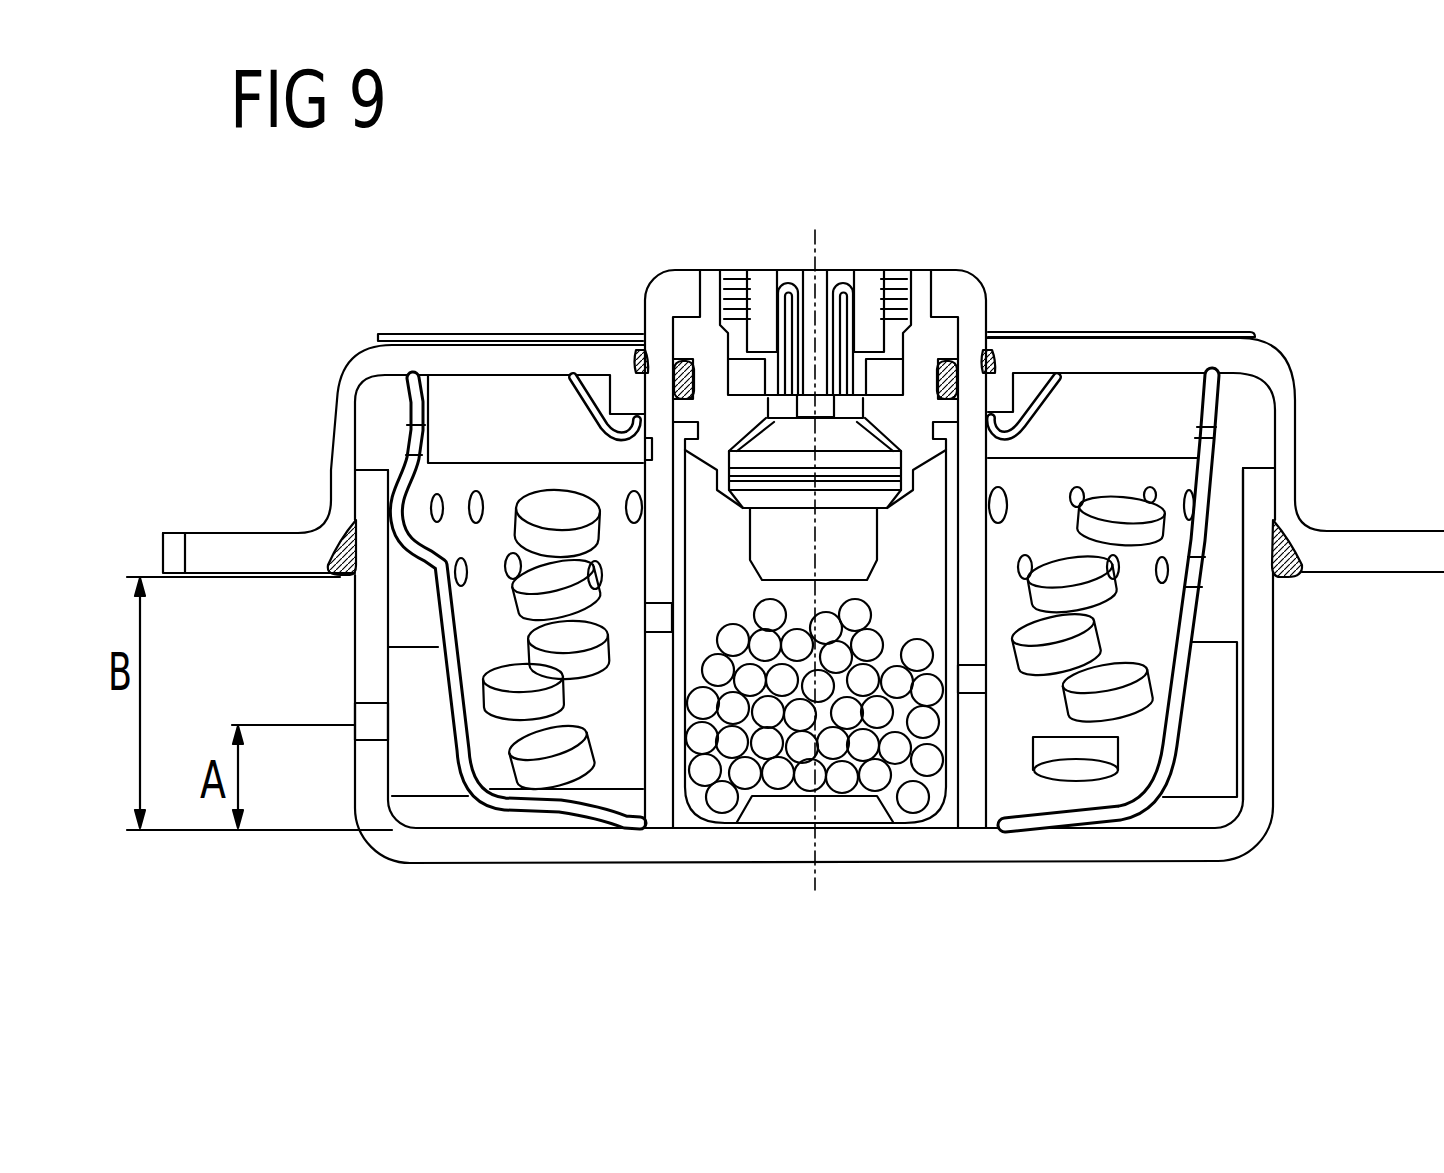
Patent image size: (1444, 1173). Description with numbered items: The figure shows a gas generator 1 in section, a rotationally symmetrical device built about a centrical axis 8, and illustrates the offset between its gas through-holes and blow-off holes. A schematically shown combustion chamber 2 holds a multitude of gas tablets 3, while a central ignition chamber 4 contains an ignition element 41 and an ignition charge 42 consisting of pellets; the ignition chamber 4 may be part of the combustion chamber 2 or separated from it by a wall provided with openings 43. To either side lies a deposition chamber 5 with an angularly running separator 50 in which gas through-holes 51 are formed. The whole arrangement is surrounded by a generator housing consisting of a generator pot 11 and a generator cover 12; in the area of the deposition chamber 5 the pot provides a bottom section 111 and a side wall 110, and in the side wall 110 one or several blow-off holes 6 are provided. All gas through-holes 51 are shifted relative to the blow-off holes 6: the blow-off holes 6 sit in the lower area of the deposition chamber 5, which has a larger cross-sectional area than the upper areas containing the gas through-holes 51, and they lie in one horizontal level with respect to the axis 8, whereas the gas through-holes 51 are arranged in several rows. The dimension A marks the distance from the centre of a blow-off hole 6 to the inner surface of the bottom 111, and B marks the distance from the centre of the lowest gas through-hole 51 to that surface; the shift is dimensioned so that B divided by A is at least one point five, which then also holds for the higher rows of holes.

The gas generator 1 is at (1125, 295).
The combustion chamber 2 is at (1018, 802).
The gas tablets 3 is at (1093, 767).
The ignition chamber 4 is at (925, 495).
The deposition chamber 5 is at (417, 748).
The blow-off holes 6 is at (365, 715).
The centrical axis 8 is at (818, 243).
The generator pot 11 is at (585, 850).
The generator cover 12 is at (1190, 350).
The ignition element 41 is at (858, 555).
The ignition charge 42 is at (911, 800).
The openings 43 is at (970, 678).
The separator 50 is at (458, 742).
The gas through-holes 51 is at (440, 566).
The side wall 110 is at (1262, 617).
The bottom section 111 is at (1193, 850).